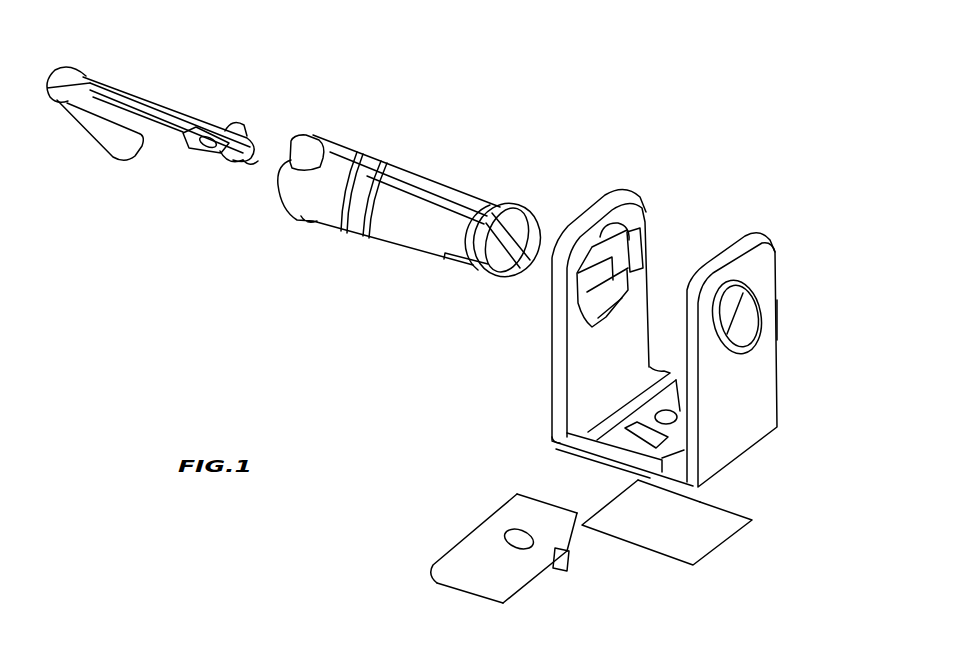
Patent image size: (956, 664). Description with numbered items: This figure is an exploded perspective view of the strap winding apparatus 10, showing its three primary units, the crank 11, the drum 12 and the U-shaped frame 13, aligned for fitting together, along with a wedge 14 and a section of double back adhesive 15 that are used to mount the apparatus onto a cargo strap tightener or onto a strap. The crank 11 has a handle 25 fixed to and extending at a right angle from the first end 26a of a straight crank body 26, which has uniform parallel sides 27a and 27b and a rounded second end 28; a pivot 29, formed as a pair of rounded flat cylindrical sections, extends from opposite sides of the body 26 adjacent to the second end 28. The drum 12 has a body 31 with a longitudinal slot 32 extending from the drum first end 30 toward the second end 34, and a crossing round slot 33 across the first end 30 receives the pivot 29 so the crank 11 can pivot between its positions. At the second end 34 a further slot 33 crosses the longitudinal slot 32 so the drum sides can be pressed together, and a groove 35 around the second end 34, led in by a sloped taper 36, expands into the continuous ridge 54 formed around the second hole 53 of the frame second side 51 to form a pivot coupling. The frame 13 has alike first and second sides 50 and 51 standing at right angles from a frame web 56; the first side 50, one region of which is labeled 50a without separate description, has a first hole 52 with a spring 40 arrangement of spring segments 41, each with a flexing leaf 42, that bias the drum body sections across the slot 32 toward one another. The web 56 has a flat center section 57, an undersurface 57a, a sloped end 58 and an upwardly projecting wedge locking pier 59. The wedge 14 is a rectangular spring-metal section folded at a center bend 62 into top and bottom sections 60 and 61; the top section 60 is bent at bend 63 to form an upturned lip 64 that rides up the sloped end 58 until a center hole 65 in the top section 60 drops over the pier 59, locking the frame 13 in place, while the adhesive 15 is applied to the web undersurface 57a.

The strap winding apparatus 10 is at (652, 155).
The crank 11 is at (150, 73).
The drum 12 is at (441, 148).
The U-shaped frame 13 is at (803, 305).
The wedge 14 is at (430, 568).
The double back adhesive 15 is at (770, 513).
The handle 25 is at (62, 108).
The crank body 26 is at (147, 128).
The crank body first end 26a is at (89, 80).
The crank body side 27a is at (190, 118).
The crank body side 27b is at (212, 148).
The rounded second end 28 is at (250, 165).
The pivot 29 is at (240, 120).
The drum first end 30 is at (293, 141).
The drum body 31 is at (437, 238).
The longitudinal slot 32 is at (452, 212).
The crossing round slot 33 is at (342, 158).
The drum second end 34 is at (518, 274).
The groove 35 is at (483, 255).
The taper 36 is at (510, 222).
The spring arrangement 40 is at (662, 236).
The spring segments 41 is at (640, 262).
The flexing leaf 42 is at (650, 235).
The first side 50 is at (600, 362).
The plate edge 50a is at (565, 325).
The second side 51 is at (736, 390).
The first hole 52 is at (570, 437).
The second hole 53 is at (728, 334).
The continuous ridge 54 is at (762, 303).
The frame web 56 is at (605, 410).
The flat center section 57 is at (593, 432).
The web undersurface 57a is at (697, 501).
The sloped end 58 is at (613, 455).
The wedge locking pier 59 is at (655, 416).
The wedge top section 60 is at (477, 561).
The wedge bottom section 61 is at (558, 569).
The bend 62 is at (447, 587).
The bend 63 is at (549, 525).
The upturned lip 64 is at (524, 500).
The wedge center hole 65 is at (508, 530).